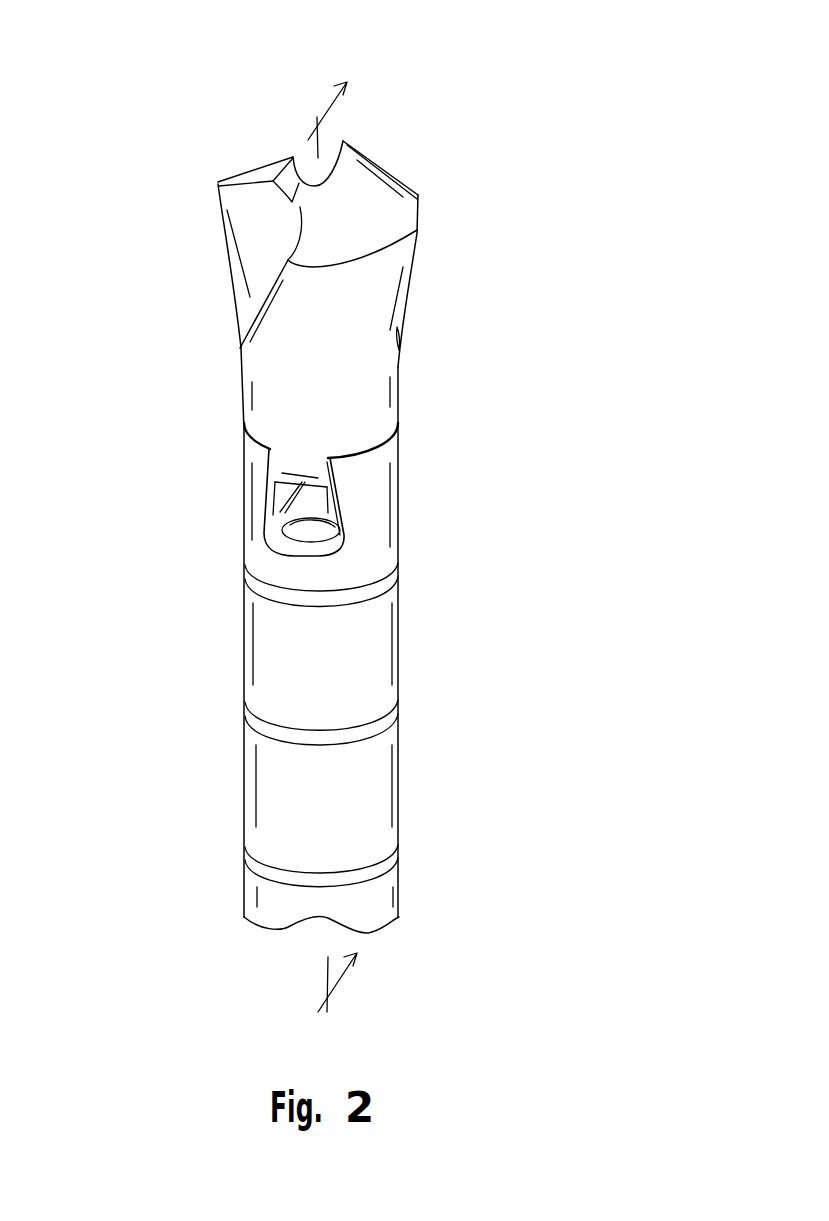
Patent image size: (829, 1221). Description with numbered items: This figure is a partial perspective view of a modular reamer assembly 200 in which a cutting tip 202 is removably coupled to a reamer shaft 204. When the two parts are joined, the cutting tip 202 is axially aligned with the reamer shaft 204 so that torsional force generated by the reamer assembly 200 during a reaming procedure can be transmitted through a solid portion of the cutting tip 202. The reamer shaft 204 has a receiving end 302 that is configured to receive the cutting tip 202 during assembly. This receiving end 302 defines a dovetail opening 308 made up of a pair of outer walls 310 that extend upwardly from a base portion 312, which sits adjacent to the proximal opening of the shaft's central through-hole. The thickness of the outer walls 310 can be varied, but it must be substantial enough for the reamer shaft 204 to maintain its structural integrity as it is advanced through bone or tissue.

The reamer assembly 200 is at (192, 121).
The cutting tip 202 is at (375, 193).
The reamer shaft 204 is at (383, 650).
The receiving end 302 is at (201, 450).
The dovetail opening 308 is at (300, 552).
The outer walls 310 is at (248, 505).
The base portion 312 is at (340, 538).